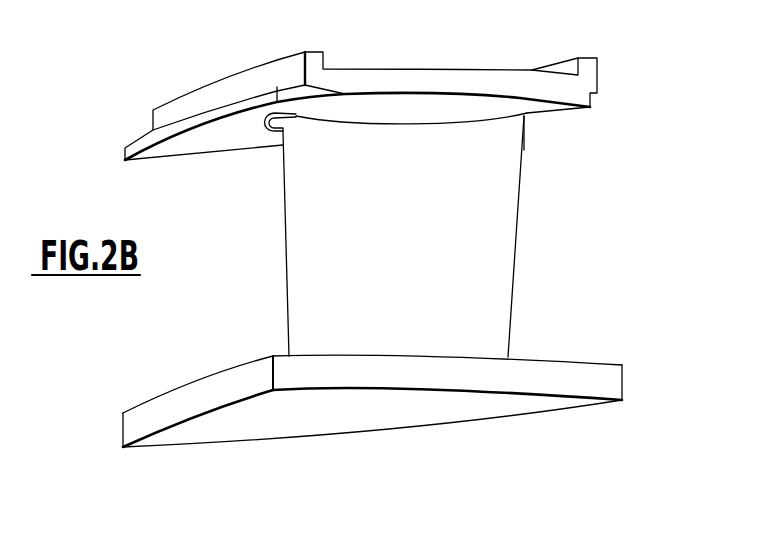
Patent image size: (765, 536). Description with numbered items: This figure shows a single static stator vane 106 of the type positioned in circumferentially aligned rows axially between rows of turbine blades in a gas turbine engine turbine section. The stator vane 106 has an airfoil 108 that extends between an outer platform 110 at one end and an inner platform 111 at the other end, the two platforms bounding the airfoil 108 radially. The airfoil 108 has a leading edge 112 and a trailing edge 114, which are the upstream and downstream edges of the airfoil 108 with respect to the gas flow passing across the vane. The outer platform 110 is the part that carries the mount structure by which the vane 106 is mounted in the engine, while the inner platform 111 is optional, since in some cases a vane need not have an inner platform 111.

The stator vane 106 is at (342, 244).
The airfoil 108 is at (429, 235).
The outer platform 110 is at (361, 89).
The inner platform 111 is at (372, 412).
The leading edge 112 is at (250, 160).
The trailing edge 114 is at (562, 130).